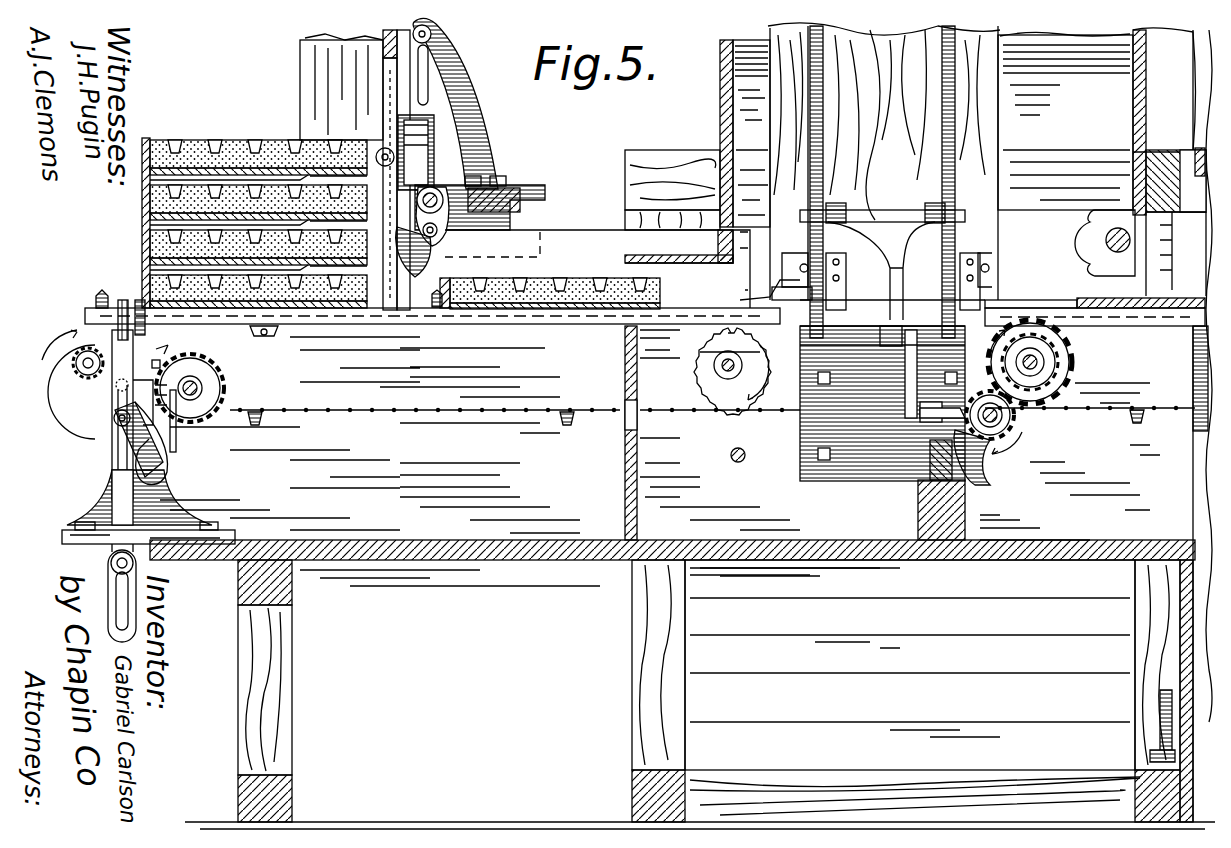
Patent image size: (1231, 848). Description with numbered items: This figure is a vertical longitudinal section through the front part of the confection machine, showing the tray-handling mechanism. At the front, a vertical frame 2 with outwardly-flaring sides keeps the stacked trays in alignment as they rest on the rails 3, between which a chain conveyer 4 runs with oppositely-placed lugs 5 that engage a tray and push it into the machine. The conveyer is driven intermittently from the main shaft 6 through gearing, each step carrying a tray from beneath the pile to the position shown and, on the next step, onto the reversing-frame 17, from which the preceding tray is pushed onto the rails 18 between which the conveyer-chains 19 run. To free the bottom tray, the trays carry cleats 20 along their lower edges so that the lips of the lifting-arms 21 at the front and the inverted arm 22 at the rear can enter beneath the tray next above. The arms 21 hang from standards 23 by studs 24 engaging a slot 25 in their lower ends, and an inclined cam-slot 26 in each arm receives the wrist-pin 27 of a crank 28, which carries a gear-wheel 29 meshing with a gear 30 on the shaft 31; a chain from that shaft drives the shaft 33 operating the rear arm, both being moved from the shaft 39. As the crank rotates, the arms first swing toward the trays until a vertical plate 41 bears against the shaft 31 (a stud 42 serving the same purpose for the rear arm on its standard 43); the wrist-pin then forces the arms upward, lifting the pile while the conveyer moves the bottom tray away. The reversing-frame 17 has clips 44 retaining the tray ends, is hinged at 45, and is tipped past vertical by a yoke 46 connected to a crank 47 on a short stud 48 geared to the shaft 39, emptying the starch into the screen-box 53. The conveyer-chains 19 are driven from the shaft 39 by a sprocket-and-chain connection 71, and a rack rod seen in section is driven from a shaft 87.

The vertical frame 2 is at (305, 80).
The rails 3 is at (520, 322).
The chain conveyer 4 is at (404, 414).
The lugs 5 is at (96, 304).
The main shaft 6 is at (1097, 245).
The reversing-frame 17 is at (955, 175).
The rails 18 is at (1118, 318).
The conveyer-chains 19 is at (1110, 412).
The cleats 20 is at (172, 182).
The lifting-arms 21 is at (115, 450).
The arm 22 is at (440, 131).
The standards 23 is at (97, 495).
The studs 24 is at (132, 565).
The slot 25 is at (116, 590).
The cam-slots 26 is at (158, 450).
The wrist-pin 27 is at (116, 416).
The crank 28 is at (115, 388).
The gear-wheel 29 is at (94, 384).
The gear 30 is at (205, 362).
The shaft 31 is at (202, 388).
The shaft 33 is at (453, 204).
The shaft 39 is at (1014, 430).
The vertical plate 41 is at (433, 174).
The stud 42 is at (400, 170).
The standard 43 is at (458, 66).
The clips 44 is at (870, 310).
The hinge 45 is at (980, 300).
The yoke 46 is at (905, 254).
The crank 47 is at (905, 390).
The short stud 48 is at (905, 420).
The screen-box 53 is at (912, 687).
The sprocket-and-chain connection 71 is at (1010, 425).
The shaft 87 is at (735, 462).